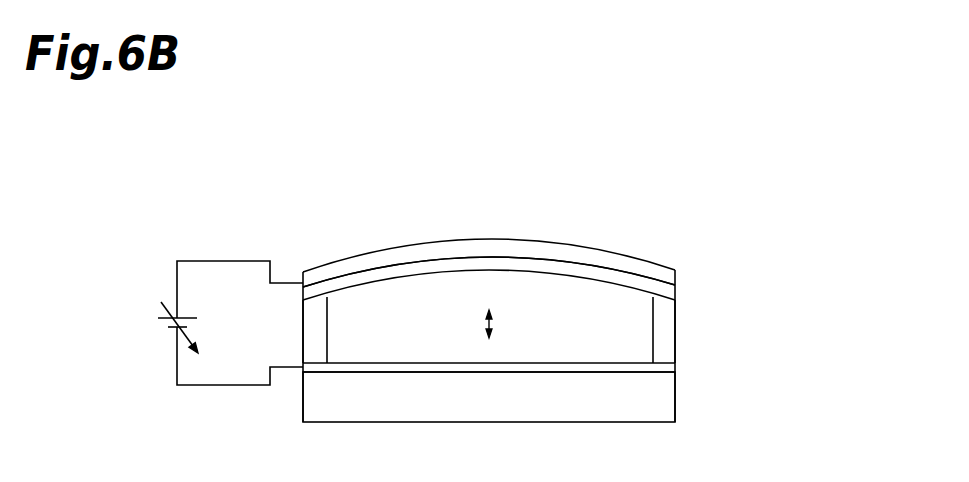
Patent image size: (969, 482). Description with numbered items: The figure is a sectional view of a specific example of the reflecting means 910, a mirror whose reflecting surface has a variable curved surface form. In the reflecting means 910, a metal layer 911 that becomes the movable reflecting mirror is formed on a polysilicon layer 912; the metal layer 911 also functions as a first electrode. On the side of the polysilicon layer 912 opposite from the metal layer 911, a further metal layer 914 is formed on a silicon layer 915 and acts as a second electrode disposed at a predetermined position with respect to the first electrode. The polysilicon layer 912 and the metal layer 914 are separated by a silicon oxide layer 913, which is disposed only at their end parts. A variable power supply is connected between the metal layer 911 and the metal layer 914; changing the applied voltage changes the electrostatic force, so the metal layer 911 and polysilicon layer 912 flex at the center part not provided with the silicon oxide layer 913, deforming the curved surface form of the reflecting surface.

The reflecting means 910 is at (615, 240).
The metal layer 911 is at (672, 273).
The polysilicon layer 912 is at (673, 292).
The silicon oxide layer 913 is at (665, 331).
The metal layer 914 is at (667, 365).
The silicon layer 915 is at (665, 397).